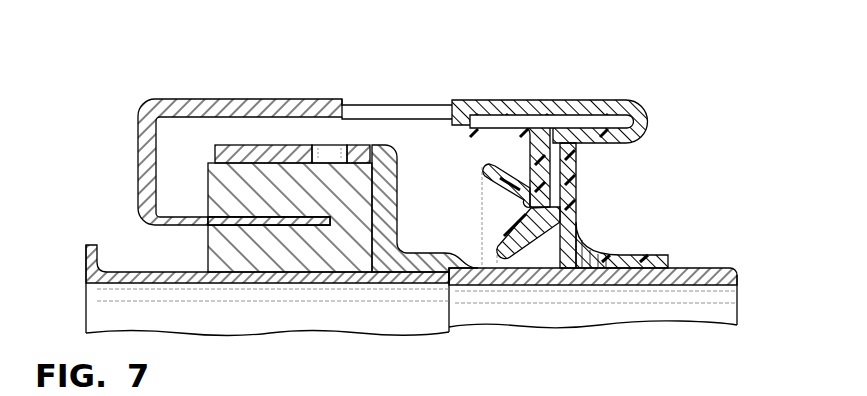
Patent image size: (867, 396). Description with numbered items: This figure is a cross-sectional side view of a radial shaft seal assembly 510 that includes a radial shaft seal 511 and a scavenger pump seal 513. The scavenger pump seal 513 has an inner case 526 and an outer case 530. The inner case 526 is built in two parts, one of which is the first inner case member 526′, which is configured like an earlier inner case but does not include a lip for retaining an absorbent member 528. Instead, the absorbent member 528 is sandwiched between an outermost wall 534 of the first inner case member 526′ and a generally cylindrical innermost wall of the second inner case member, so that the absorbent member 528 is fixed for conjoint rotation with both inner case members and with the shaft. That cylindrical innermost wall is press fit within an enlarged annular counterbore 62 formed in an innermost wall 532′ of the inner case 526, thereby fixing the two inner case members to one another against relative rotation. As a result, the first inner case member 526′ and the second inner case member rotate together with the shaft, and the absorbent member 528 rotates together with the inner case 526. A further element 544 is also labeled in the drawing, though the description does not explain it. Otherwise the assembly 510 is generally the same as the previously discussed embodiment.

The radial shaft seal assembly 510 is at (609, 67).
The radial shaft seal 511 is at (657, 103).
The scavenger pump seal 513 is at (113, 110).
The inner case 526 is at (409, 318).
The first inner case member 526′ is at (700, 278).
The absorbent member 528 is at (345, 192).
The outer case 530 is at (210, 95).
The innermost wall of the inner case 532′ is at (567, 281).
The outermost wall 534 is at (272, 145).
The clip lower arm 544 is at (182, 218).
The enlarged annular counterbore 62 is at (412, 273).